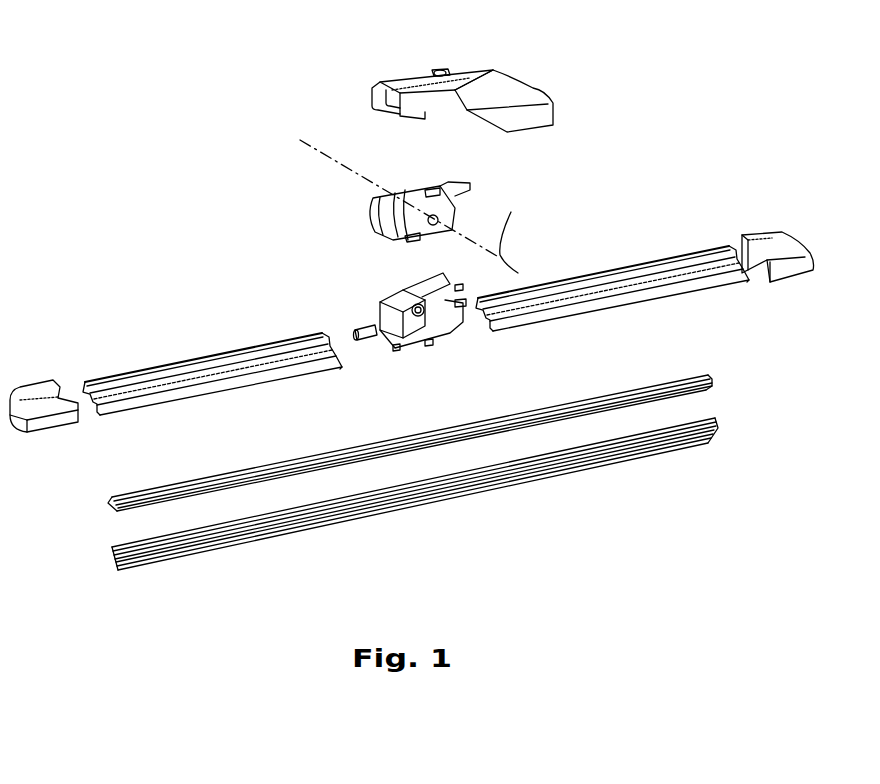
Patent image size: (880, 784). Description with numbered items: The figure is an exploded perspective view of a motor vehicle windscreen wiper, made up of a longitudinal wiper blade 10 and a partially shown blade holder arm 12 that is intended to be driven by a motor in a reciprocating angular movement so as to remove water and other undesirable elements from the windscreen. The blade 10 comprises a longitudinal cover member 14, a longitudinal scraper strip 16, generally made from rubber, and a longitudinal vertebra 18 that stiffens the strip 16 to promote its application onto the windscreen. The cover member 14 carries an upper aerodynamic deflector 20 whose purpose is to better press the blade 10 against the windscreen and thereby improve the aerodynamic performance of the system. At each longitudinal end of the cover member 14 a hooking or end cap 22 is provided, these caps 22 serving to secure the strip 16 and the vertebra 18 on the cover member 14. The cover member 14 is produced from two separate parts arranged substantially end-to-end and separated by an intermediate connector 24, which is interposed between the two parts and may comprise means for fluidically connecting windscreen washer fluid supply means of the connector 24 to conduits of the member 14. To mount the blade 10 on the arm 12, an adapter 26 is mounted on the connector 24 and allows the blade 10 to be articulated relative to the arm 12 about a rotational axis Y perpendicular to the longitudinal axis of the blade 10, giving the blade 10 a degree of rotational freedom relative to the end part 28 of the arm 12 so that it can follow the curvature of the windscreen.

The wiper blade 10 is at (605, 192).
The blade holder arm 12 is at (393, 78).
The longitudinal cover member 14 is at (177, 362).
The longitudinal scraper strip 16 is at (506, 486).
The longitudinal vertebra 18 is at (273, 467).
The upper aerodynamic deflector 20 is at (615, 278).
The end caps 22 is at (41, 378).
The intermediate connector 24 is at (378, 310).
The adapter 26 is at (375, 215).
The end part of the arm 28 is at (441, 70).